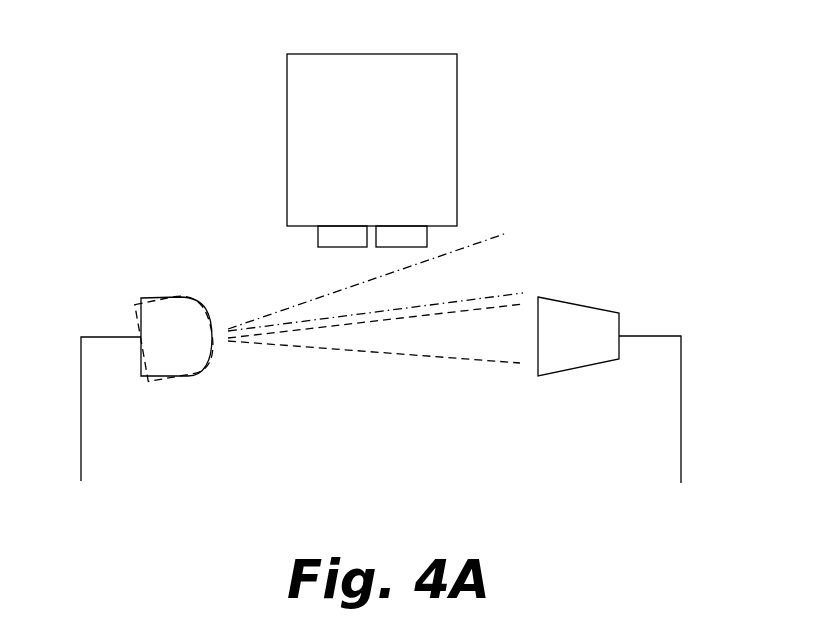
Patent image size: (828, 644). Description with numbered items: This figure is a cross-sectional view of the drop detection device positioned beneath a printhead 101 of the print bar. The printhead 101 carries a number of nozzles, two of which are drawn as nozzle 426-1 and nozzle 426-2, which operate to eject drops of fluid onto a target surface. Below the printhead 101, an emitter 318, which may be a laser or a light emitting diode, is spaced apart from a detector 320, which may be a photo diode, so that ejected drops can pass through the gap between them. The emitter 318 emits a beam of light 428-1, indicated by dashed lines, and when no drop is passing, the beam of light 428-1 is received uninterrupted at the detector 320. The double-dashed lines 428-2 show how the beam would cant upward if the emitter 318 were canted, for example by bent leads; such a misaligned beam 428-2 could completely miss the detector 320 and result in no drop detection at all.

The printhead 101 is at (300, 117).
The nozzle 426-1 is at (326, 243).
The nozzle 426-2 is at (416, 238).
The emitter 318 is at (180, 307).
The detector 320 is at (563, 320).
The beam of light 428-1 is at (457, 358).
The canted beam 428-2 is at (310, 302).